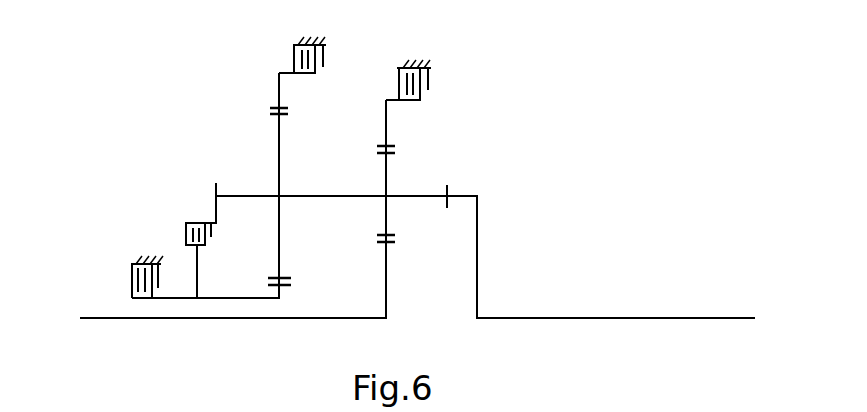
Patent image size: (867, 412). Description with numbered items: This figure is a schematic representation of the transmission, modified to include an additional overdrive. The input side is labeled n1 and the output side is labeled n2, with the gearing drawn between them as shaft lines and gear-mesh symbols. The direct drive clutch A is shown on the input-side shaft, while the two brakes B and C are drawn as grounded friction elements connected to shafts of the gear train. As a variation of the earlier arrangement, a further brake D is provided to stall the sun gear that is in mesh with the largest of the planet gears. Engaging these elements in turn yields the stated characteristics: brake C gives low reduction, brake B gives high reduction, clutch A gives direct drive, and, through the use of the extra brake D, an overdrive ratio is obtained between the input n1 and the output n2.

The direct drive clutch A is at (192, 229).
The brake B is at (310, 62).
The brake C is at (417, 87).
The further brake D is at (137, 277).
The input speed n1 is at (37, 303).
The output speed n2 is at (778, 298).